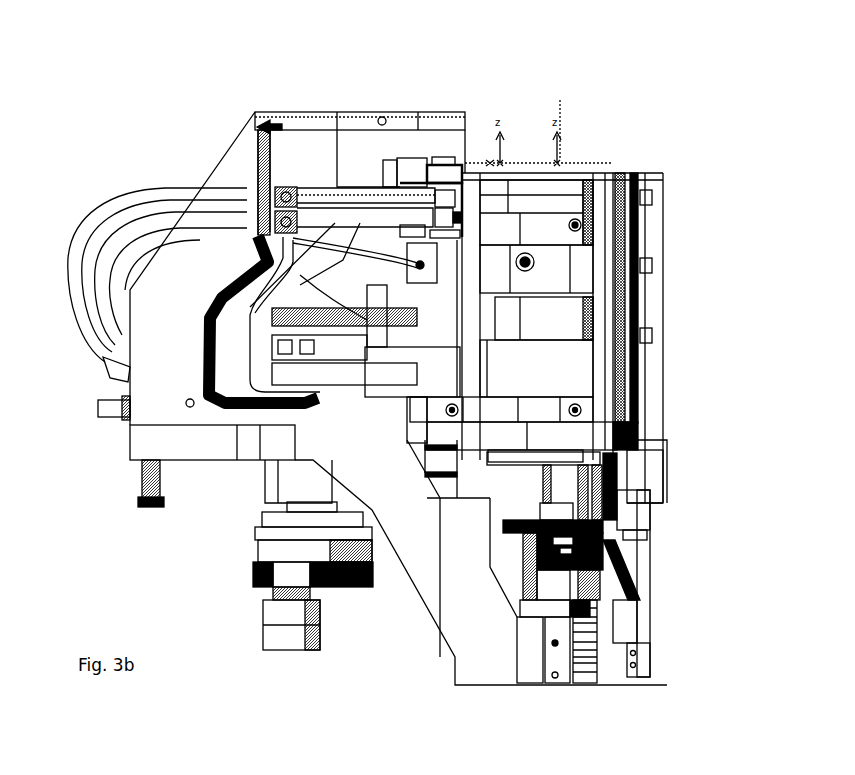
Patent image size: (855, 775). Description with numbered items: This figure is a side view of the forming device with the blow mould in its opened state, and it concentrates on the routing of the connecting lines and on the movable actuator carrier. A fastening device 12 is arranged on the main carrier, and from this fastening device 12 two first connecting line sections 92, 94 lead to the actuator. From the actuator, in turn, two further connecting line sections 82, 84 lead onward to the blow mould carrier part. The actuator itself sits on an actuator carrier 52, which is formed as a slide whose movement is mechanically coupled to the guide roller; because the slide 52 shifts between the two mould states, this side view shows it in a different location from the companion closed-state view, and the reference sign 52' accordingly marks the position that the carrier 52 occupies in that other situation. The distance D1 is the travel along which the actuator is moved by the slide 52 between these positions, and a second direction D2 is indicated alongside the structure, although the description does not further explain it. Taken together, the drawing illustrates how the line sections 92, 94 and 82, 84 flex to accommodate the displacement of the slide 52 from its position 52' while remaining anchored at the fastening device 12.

The fastening device 12 is at (110, 414).
The actuator carrier 52 is at (261, 231).
The position of the carrier 52' is at (291, 147).
The connecting line section 82 is at (347, 195).
The connecting line section 84 is at (382, 222).
The first connecting line section 92 is at (92, 217).
The first connecting line section 94 is at (123, 233).
The distance D1 is at (274, 118).
The direction D2 is at (519, 162).